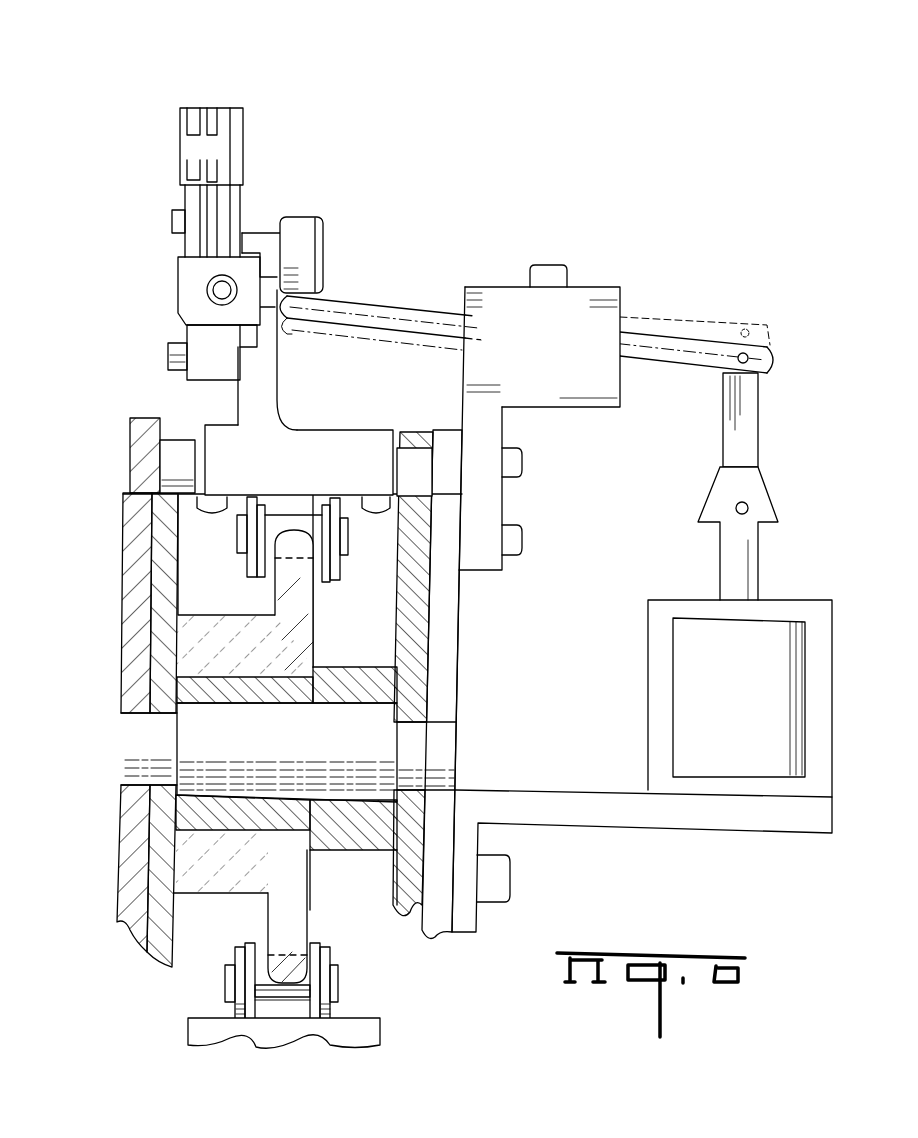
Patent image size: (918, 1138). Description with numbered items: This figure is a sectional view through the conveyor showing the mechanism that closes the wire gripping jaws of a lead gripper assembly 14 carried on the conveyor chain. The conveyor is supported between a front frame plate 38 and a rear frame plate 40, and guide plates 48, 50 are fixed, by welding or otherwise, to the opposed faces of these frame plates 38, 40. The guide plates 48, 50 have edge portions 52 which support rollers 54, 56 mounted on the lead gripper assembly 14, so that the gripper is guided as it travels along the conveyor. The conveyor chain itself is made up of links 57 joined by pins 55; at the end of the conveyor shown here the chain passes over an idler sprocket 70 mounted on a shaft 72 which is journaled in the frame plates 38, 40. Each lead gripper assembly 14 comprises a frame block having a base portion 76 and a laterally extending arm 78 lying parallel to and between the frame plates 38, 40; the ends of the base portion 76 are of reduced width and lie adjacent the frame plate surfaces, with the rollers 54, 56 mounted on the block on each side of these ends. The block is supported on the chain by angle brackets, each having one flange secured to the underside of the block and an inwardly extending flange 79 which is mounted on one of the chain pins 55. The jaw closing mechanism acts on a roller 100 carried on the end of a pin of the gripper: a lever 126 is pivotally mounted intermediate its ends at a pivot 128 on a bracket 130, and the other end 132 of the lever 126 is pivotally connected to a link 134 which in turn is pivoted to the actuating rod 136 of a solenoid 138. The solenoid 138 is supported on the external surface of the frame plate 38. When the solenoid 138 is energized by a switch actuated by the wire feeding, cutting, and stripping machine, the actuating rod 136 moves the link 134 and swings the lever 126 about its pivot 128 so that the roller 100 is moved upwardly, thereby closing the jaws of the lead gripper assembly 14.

The lead gripper assembly 14 is at (232, 102).
The front frame plate 38 is at (455, 680).
The rear frame plate 40 is at (135, 672).
The guide plate 48 is at (410, 612).
The guide plate 50 is at (175, 598).
The edge portion 52 is at (150, 485).
The roller 54 is at (415, 462).
The chain pin 55 is at (295, 523).
The roller 56 is at (175, 465).
The chain link 57 is at (253, 497).
The idler sprocket 70 is at (295, 895).
The shaft 72 is at (130, 753).
The base portion 76 is at (335, 440).
The laterally extending arm 78 is at (263, 380).
The inwardly extending flange 79 is at (255, 563).
The roller 100 is at (305, 228).
The lever 126 is at (430, 326).
The pivot 128 is at (485, 322).
The bracket 130 is at (612, 300).
The other end of lever 132 is at (775, 357).
The link 134 is at (748, 437).
The actuating rod 136 is at (752, 556).
The solenoid 138 is at (688, 730).